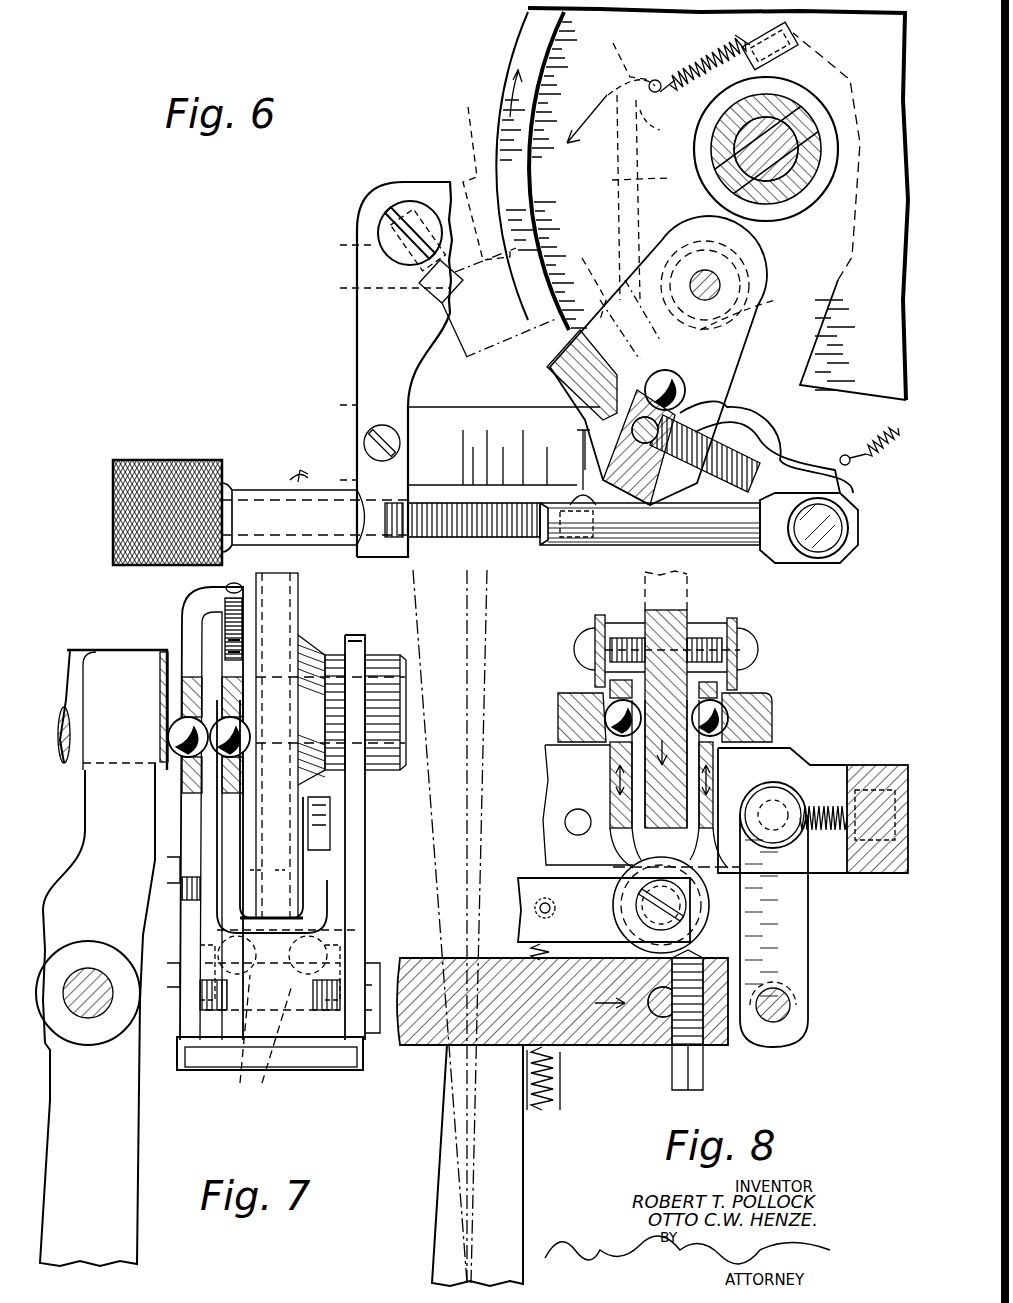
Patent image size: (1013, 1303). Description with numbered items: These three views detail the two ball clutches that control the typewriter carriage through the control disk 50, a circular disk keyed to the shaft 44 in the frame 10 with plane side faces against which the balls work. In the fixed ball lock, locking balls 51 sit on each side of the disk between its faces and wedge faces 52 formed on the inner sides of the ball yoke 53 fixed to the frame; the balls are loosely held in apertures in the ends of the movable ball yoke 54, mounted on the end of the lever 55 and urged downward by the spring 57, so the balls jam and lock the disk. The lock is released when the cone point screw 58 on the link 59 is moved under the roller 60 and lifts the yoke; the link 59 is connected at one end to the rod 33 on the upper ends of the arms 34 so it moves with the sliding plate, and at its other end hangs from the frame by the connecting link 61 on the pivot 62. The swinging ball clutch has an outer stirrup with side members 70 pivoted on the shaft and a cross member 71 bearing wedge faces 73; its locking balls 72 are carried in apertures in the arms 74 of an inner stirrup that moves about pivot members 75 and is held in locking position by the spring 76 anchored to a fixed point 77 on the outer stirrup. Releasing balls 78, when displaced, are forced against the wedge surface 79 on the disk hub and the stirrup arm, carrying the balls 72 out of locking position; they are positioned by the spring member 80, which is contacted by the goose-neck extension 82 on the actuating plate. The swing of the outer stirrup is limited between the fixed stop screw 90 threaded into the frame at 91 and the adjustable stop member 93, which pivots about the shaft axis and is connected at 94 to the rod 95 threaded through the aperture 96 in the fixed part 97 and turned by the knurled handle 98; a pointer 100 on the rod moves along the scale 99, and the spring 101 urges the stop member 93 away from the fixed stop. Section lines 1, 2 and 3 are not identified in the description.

In FIG. 7, the reference line 1 is at (418, 600).
In FIG. 7, the reference line 2 is at (474, 926).
In FIG. 7, the reference line 3 is at (488, 614).
In FIG. 6, the frame 10 is at (440, 178).
In FIG. 8, the frame 10 is at (885, 755).
In FIG. 7, the rod 33 is at (92, 1020).
In FIG. 8, the rod 33 is at (445, 1047).
In FIG. 7, the arms 34 is at (140, 1222).
In FIG. 8, the arms 34 is at (442, 1236).
In FIG. 7, the shaft 44 is at (78, 650).
In FIG. 6, the control disk 50 is at (530, 32).
In FIG. 7, the control disk 50 is at (292, 612).
In FIG. 8, the control disk 50 is at (690, 625).
In FIG. 8, the locking balls 51 is at (714, 712).
In FIG. 8, the wedge faces 52 is at (565, 708).
In FIG. 8, the ball yoke 53 is at (598, 686).
In FIG. 8, the ball yoke 54 is at (615, 775).
In FIG. 8, the lever 55 is at (520, 890).
In FIG. 8, the spring 57 is at (542, 1112).
In FIG. 8, the cone point screw 58 is at (705, 1078).
In FIG. 8, the link 59 is at (608, 1046).
In FIG. 8, the roller 60 is at (672, 906).
In FIG. 8, the connecting link 61 is at (810, 935).
In FIG. 8, the pivot 62 is at (775, 818).
In FIG. 6, the side members 70 is at (607, 95).
In FIG. 7, the side members 70 is at (180, 697).
In FIG. 6, the cross member 71 is at (468, 360).
In FIG. 7, the cross member 71 is at (318, 1060).
In FIG. 6, the locking balls 72 is at (700, 392).
In FIG. 7, the locking balls 72 is at (263, 1047).
In FIG. 6, the wedge faces 73 is at (657, 360).
In FIG. 7, the wedge faces 73 is at (200, 965).
In FIG. 6, the arms 74 is at (758, 340).
In FIG. 7, the arms 74 is at (225, 900).
In FIG. 6, the pivot members 75 is at (720, 287).
In FIG. 7, the pivot members 75 is at (240, 845).
In FIG. 6, the spring 76 is at (672, 78).
In FIG. 7, the spring 76 is at (222, 608).
In FIG. 6, the fixed point 77 is at (800, 38).
In FIG. 7, the fixed point 77 is at (248, 588).
In FIG. 6, the releasing balls 78 is at (612, 180).
In FIG. 7, the releasing balls 78 is at (215, 755).
In FIG. 7, the wedge surface 79 is at (215, 826).
In FIG. 7, the spring member 80 is at (160, 665).
In FIG. 7, the goose-neck extension 82 is at (85, 790).
In FIG. 6, the screw 90 is at (455, 292).
In FIG. 6, the fixed main frame location 91 is at (375, 245).
In FIG. 6, the adjustable stop member 93 is at (822, 318).
In FIG. 6, the pivotal connection 94 is at (842, 470).
In FIG. 6, the rod 95 is at (702, 546).
In FIG. 6, the aperture 96 is at (410, 546).
In FIG. 6, the part 97 is at (362, 552).
In FIG. 6, the knurled handle 98 is at (170, 462).
In FIG. 6, the scale 99 is at (492, 420).
In FIG. 6, the pointer 100 is at (600, 515).
In FIG. 6, the spring 101 is at (884, 450).